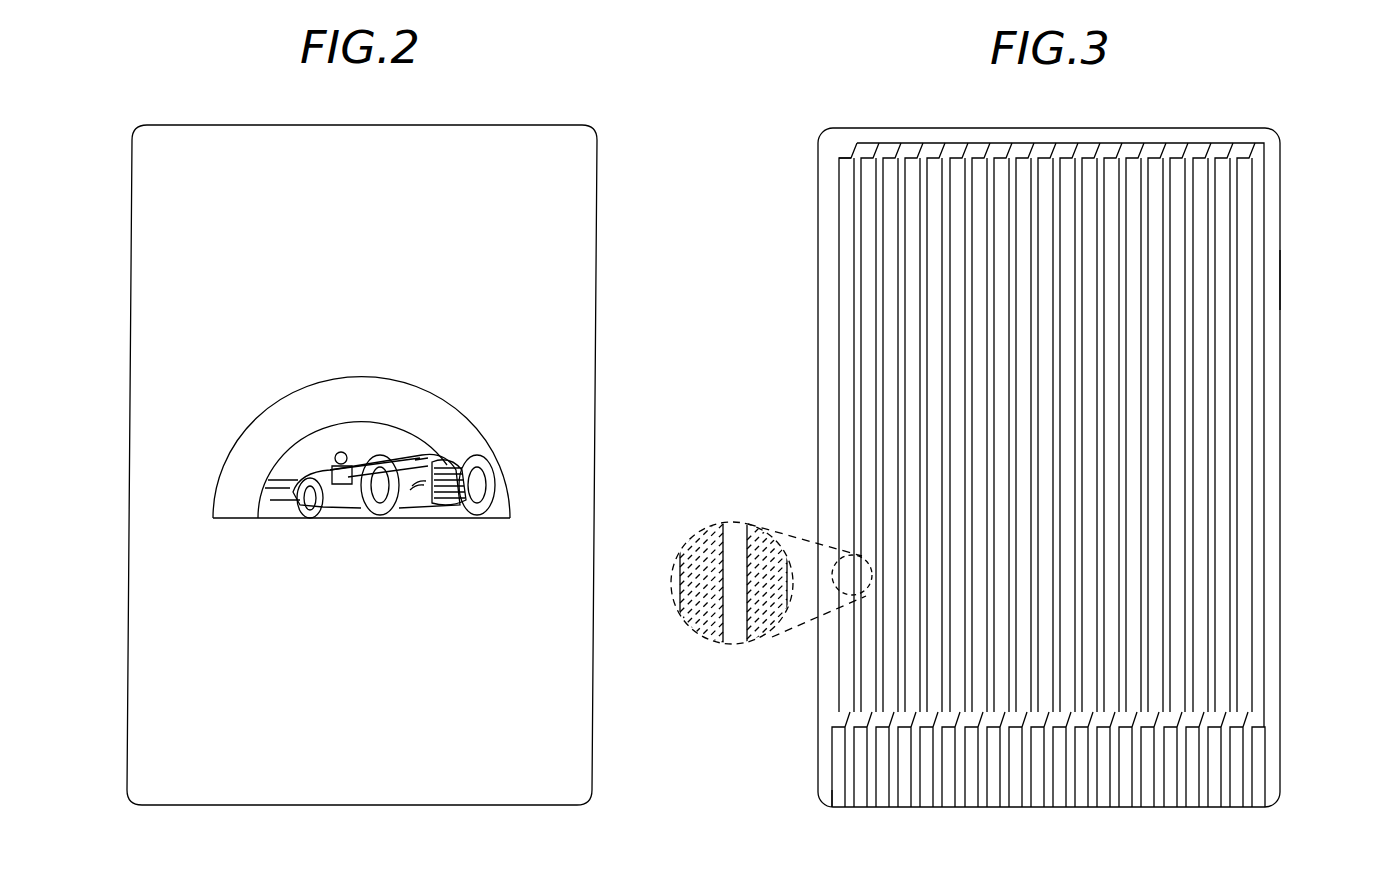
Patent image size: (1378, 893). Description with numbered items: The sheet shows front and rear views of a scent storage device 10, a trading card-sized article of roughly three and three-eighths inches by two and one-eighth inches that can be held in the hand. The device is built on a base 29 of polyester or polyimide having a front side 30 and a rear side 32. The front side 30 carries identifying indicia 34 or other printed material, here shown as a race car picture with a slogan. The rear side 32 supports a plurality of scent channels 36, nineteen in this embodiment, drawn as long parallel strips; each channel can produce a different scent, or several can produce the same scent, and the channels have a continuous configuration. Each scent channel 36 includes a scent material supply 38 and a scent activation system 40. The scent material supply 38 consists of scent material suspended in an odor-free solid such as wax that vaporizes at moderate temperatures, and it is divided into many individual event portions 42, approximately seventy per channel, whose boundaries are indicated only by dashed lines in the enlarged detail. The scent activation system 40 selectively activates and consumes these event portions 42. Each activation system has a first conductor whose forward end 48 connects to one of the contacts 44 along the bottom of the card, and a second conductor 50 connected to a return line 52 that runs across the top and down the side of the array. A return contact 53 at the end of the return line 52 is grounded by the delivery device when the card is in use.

In FIG. 2, the scent storage device 10 is at (462, 97).
In FIG. 3, the scent storage device 10 is at (1159, 100).
In FIG. 3, the base 29 is at (1280, 511).
In FIG. 2, the front side 30 is at (563, 275).
In FIG. 3, the rear side 32 is at (1270, 278).
In FIG. 2, the identifying indicia 34 is at (514, 427).
In FIG. 3, the scent channels 36 is at (944, 398).
In FIG. 3, the scent material supply 38 is at (845, 400).
In FIG. 3, the scent activation system 40 is at (1031, 752).
In FIG. 3, the event portions 42 is at (700, 614).
In FIG. 3, the contacts 44 is at (832, 793).
In FIG. 3, the forward end 48 is at (840, 718).
In FIG. 3, the second conductor 50 is at (848, 150).
In FIG. 3, the return line 52 is at (863, 147).
In FIG. 3, the return contact 53 is at (1262, 771).